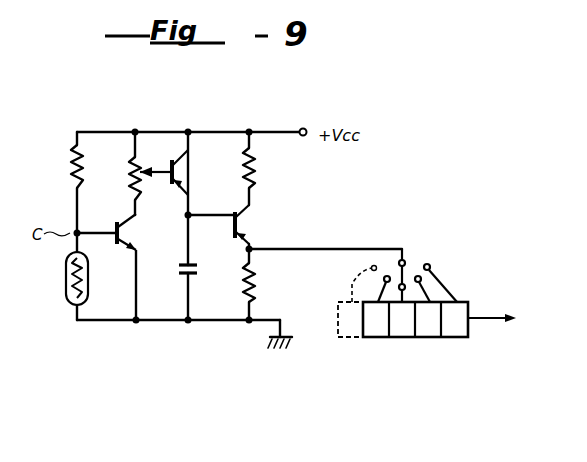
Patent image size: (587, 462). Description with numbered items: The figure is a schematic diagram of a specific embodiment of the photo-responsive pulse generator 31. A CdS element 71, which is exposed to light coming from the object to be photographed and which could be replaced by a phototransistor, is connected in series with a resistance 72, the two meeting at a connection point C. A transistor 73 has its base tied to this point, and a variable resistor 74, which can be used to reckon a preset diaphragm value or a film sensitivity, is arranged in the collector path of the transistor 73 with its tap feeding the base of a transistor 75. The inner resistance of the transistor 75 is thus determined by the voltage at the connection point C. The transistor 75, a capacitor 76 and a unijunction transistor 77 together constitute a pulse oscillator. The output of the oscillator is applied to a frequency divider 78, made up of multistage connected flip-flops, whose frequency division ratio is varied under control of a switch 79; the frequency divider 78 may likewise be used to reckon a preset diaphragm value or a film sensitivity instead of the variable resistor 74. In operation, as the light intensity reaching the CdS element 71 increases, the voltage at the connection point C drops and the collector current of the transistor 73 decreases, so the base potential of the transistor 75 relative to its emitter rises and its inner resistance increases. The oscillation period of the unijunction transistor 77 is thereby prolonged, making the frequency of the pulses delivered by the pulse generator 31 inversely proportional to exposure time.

The photo-responsive pulse generator 31 is at (150, 339).
The CdS element 71 is at (66, 284).
The resistance 72 is at (70, 170).
The transistor 73 is at (138, 240).
The variable resistor 74 is at (138, 160).
The transistor 75 is at (186, 174).
The capacitor 76 is at (200, 270).
The unijunction transistor 77 is at (252, 226).
The frequency divider 78 is at (405, 338).
The switch 79 is at (408, 272).